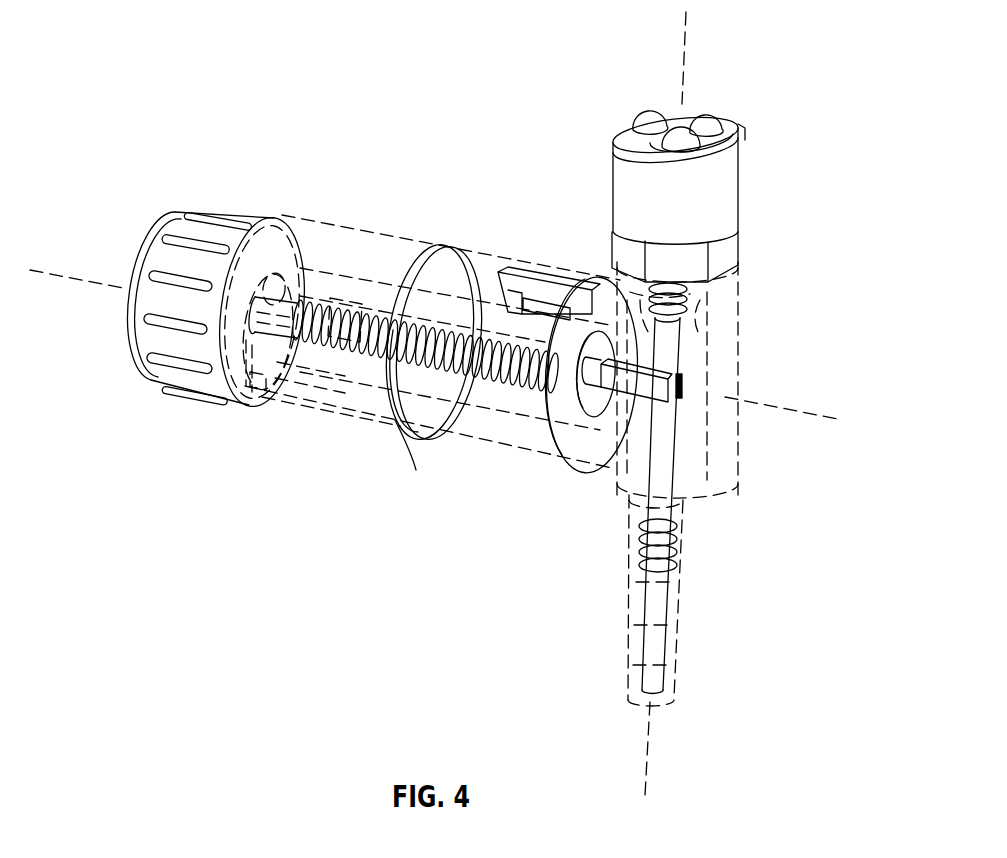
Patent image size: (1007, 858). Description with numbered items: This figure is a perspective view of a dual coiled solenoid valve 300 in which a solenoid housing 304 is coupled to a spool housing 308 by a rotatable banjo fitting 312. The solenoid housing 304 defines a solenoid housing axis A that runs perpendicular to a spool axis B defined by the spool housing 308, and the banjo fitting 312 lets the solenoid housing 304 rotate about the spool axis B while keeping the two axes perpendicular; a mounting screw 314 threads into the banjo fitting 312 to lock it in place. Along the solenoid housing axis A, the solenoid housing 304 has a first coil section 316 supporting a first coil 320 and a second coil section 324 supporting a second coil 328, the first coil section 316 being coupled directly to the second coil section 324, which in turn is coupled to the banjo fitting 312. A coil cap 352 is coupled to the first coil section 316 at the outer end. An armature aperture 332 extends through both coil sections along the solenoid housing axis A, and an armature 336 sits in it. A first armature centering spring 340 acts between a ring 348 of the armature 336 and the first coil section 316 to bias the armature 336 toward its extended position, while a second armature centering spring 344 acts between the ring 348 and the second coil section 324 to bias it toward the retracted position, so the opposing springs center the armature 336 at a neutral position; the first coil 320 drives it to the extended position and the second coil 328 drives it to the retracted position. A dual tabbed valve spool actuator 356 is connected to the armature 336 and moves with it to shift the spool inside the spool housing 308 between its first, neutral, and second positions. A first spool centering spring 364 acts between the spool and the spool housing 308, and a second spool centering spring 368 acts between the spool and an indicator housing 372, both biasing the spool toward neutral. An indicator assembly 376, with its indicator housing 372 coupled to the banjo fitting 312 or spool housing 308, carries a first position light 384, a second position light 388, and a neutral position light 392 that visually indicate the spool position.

The duel coiled solenoid valve 300 is at (148, 145).
The solenoid housing 304 is at (379, 240).
The spool housing 308 is at (712, 502).
The banjo fitting 312 is at (724, 392).
The mounting screw 314 is at (722, 290).
The first coil section 316 is at (313, 238).
The first coil 320 is at (299, 402).
The second coil section 324 is at (487, 262).
The second coil 328 is at (548, 296).
The armature aperture 332 is at (628, 388).
The armature 336 is at (560, 408).
The first armature centering spring 340 is at (348, 345).
The second armature centering spring 344 is at (493, 380).
The ring 348 is at (412, 396).
The coil cap 352 is at (145, 340).
The dual tabbed valve spool actuator 356 is at (616, 402).
The first spool centering spring 364 is at (678, 560).
The second spool centering spring 368 is at (697, 320).
The indicator housing 372 is at (722, 262).
The indicator assembly 376 is at (762, 158).
The first position light 384 is at (678, 126).
The second position light 388 is at (640, 118).
The neutral position light 392 is at (704, 118).
The solenoid housing axis A is at (794, 412).
The spool axis B is at (648, 732).